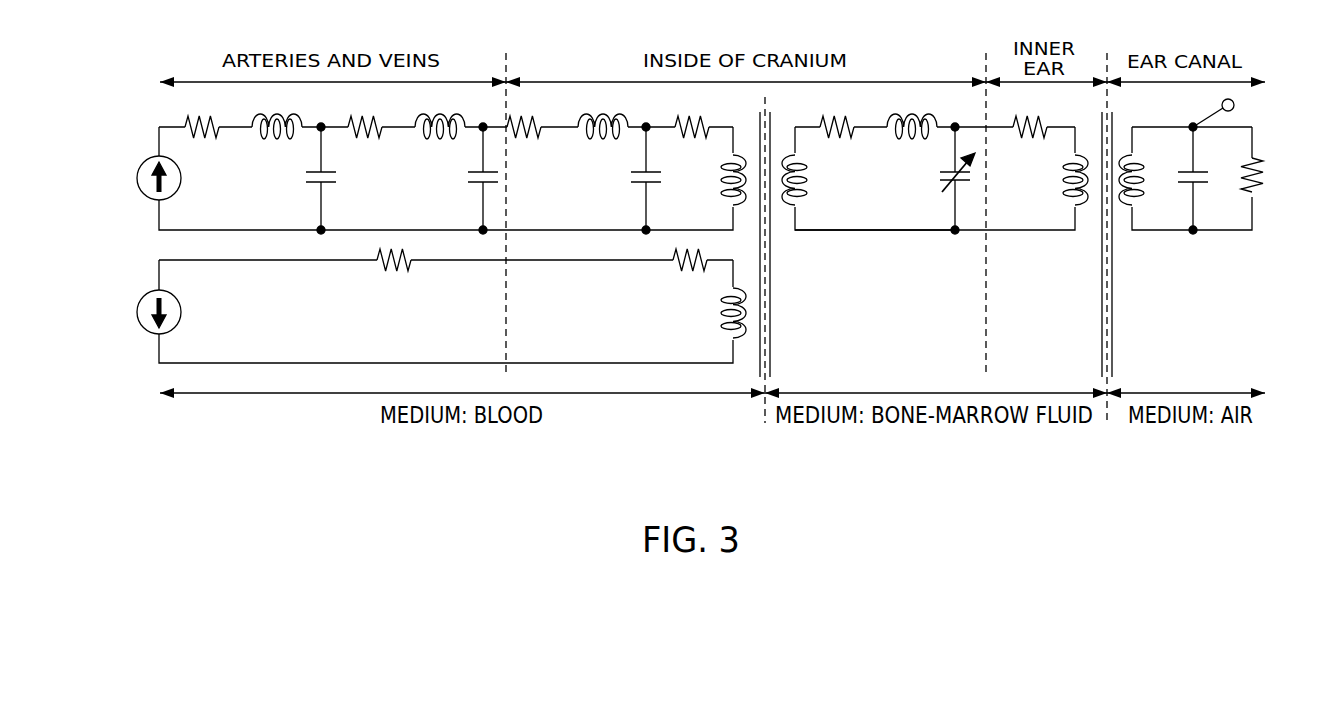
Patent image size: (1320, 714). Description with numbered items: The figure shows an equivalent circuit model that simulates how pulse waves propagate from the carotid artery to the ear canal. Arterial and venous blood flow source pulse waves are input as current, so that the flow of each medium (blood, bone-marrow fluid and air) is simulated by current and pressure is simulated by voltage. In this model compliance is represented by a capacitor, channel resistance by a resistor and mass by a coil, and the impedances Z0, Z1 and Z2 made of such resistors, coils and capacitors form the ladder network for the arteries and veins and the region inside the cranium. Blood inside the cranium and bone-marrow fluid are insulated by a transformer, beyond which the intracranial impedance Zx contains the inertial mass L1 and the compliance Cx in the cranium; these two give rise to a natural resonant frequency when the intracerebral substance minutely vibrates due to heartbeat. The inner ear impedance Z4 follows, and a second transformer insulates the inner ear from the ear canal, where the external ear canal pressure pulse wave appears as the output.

The impedance of arteries and veins section Z0 is at (260, 174).
The impedance of arteries and veins section Z1 is at (423, 174).
The impedance inside cranium Z2 is at (608, 174).
The inertial mass in the cranium L1 is at (912, 113).
The compliance in the cranium Cx is at (941, 178).
The impedance of intracranial section Zx is at (875, 191).
The impedance of inner ear Z4 is at (1050, 160).